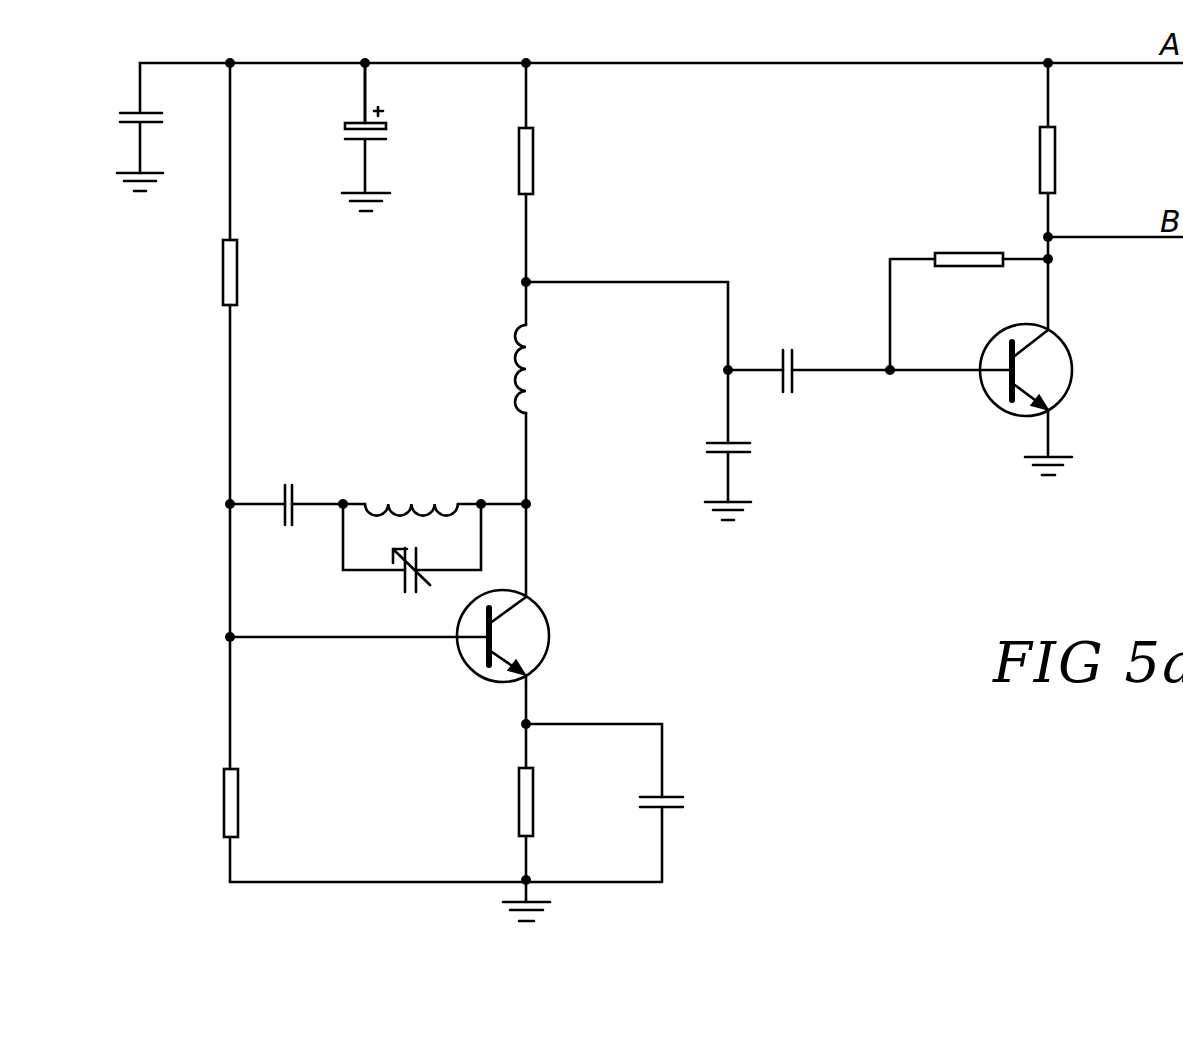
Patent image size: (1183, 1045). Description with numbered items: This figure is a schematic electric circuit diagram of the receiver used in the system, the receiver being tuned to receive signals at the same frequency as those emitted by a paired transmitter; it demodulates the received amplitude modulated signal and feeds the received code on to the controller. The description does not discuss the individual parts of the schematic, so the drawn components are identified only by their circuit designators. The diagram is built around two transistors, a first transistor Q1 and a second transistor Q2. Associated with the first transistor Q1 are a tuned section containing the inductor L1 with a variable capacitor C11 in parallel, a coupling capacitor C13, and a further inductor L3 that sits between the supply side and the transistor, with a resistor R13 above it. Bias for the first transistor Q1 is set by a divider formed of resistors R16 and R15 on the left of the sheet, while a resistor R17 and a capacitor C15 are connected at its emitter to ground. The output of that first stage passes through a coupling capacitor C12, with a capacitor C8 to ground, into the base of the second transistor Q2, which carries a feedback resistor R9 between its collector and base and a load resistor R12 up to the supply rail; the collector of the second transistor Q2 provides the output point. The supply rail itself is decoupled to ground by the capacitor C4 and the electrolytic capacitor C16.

The capacitor 100n C4 is at (107, 118).
The electrolytic capacitor 10u C16 is at (396, 137).
The resistor 5k6 R13 is at (564, 161).
The resistor 120k R16 is at (190, 272).
The resistor 220k R15 is at (190, 802).
The resistor 8k2 R17 is at (485, 801).
The capacitor 330p C15 is at (706, 814).
The inductor 22u L3 is at (551, 369).
The capacitor 27p C13 is at (301, 481).
The inductor L1 is at (411, 493).
The variable capacitor 10p C11 is at (412, 566).
The transistor 2N3563 Q1 is at (471, 663).
The capacitor 100n C12 is at (809, 347).
The capacitor 2n2 C8 is at (760, 461).
The resistor 2M2 R9 is at (969, 229).
The resistor 47k R12 is at (1086, 160).
The transistor BC547 Q2 is at (1072, 370).